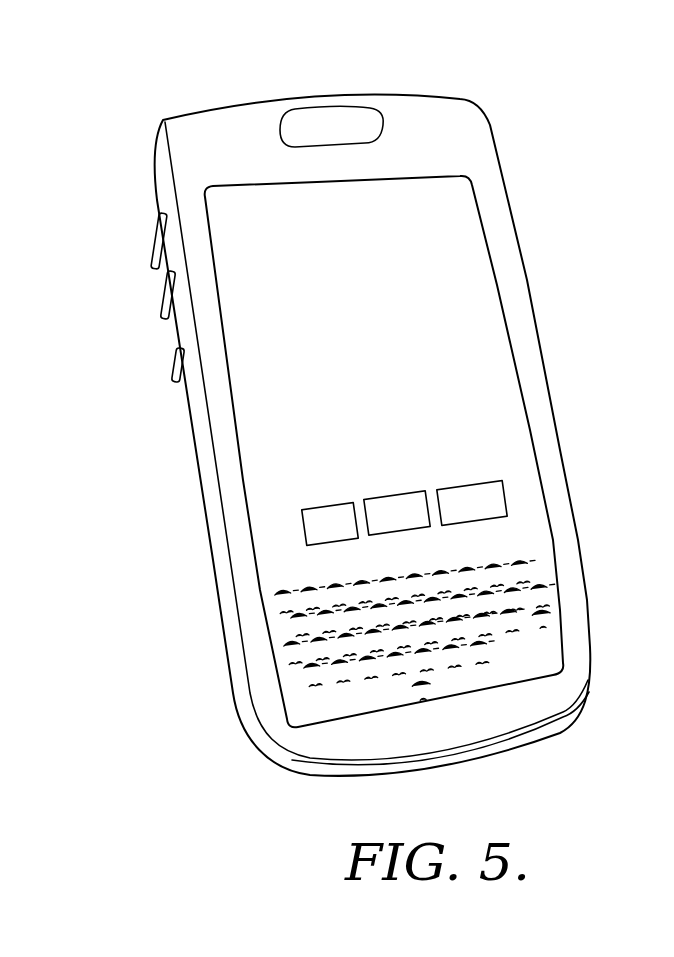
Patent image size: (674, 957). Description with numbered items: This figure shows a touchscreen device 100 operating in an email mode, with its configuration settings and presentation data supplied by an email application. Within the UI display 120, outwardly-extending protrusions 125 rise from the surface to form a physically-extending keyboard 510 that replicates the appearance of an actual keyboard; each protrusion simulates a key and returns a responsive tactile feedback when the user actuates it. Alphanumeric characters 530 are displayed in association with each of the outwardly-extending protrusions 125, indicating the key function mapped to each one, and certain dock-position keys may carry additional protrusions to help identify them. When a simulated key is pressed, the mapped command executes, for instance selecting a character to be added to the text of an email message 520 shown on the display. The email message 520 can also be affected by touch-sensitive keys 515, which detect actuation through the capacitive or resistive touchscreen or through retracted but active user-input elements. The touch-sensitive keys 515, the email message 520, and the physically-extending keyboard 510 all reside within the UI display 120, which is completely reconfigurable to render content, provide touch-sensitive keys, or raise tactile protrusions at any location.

The touchscreen device 100 is at (112, 121).
The UI display 120 is at (217, 449).
The outwardly-extending protrusions 125 is at (440, 687).
The physically-extending keyboard 510 is at (265, 600).
The touch-sensitive keys 515 is at (503, 472).
The email message 520 is at (265, 420).
The alphanumeric characters 530 is at (410, 690).